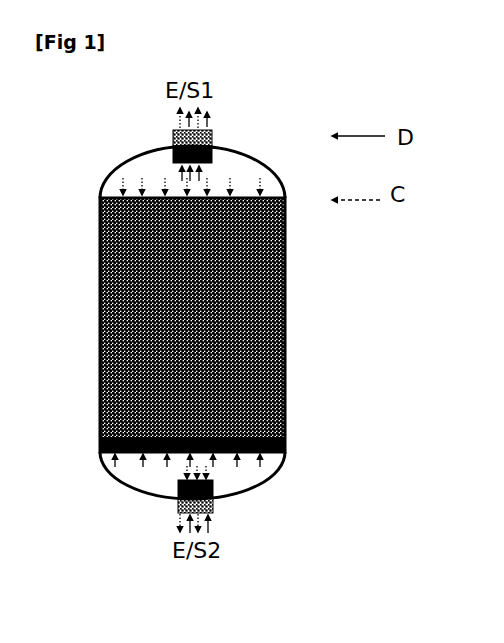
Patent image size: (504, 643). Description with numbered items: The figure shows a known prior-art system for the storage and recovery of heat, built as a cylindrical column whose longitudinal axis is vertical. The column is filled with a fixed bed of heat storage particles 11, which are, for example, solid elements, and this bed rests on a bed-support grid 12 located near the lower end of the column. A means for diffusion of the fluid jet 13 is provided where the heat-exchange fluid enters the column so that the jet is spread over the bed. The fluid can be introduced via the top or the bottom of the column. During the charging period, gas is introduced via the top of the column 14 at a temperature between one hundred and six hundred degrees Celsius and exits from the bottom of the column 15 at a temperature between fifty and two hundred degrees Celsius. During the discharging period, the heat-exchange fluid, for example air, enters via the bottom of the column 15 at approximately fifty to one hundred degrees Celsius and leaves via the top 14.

The fixed bed of heat storage particles 11 is at (100, 222).
The bed-support grid 12 is at (100, 442).
The means for diffusion of the fluid jet 13 is at (173, 152).
The top of the column 14 is at (173, 133).
The bottom of the column 15 is at (178, 515).